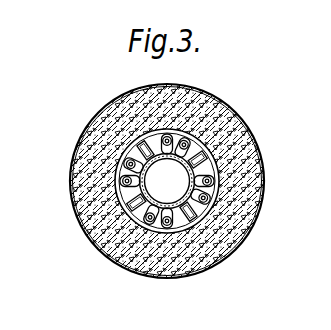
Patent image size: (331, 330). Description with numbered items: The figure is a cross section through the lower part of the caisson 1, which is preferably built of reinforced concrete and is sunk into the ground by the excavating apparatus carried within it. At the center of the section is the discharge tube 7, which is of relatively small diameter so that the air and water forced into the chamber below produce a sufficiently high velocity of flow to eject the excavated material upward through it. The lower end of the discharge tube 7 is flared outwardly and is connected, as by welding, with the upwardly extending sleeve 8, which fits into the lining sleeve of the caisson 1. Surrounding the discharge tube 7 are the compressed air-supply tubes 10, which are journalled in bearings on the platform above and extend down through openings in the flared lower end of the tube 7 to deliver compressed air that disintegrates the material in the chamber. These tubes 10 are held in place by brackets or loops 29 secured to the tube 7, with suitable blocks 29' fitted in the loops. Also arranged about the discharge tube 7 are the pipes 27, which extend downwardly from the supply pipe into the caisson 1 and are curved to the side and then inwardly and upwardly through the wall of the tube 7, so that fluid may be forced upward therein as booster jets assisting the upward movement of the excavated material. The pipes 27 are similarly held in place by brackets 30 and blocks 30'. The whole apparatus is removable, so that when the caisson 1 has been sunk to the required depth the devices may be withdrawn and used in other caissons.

The caisson 1 is at (98, 105).
The pipes 27 is at (100, 133).
The brackets 30 is at (130, 181).
The blocks 30' is at (124, 181).
The compressed air-supply tubes 10 is at (106, 196).
The brackets or loops 29 is at (136, 196).
The blocks 29' is at (167, 181).
The sleeve 8 is at (165, 253).
The discharge tube 7 is at (222, 165).